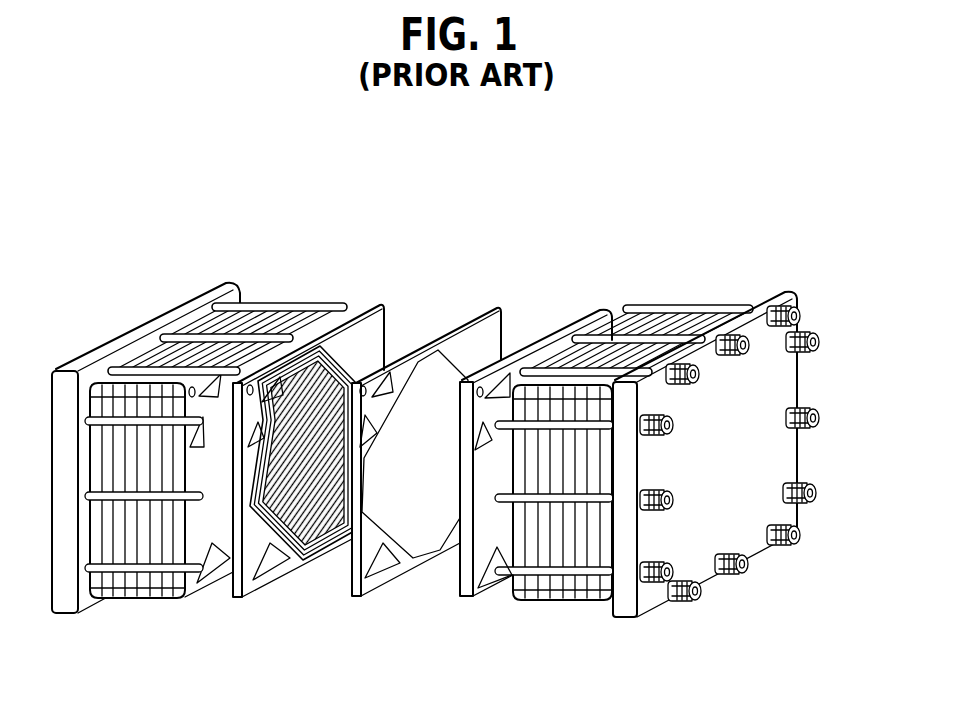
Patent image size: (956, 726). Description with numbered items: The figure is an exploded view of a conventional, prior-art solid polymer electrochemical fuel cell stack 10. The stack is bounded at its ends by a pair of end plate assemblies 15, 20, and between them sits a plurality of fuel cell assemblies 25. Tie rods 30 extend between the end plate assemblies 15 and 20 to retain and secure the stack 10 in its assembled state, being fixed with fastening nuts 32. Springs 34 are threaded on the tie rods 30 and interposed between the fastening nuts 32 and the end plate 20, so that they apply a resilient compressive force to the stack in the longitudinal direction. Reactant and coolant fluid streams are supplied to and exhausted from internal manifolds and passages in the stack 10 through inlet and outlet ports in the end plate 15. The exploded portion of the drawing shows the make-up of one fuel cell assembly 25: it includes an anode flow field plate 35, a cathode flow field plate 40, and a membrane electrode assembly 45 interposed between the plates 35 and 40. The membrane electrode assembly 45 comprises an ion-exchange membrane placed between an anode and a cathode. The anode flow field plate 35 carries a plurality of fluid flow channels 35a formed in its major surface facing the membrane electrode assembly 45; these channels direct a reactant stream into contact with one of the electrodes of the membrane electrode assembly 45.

The solid polymer electrochemical fuel cell stack 10 is at (239, 207).
The end plate assembly 15 is at (103, 350).
The end plate assembly 20 is at (785, 293).
The fuel cell assembly 25 is at (157, 598).
The tie rod 30 is at (298, 306).
The fastening nut 32 is at (820, 416).
The spring 34 is at (733, 576).
The anode flow field plate 35 is at (381, 307).
The fluid flow channel 35a is at (330, 540).
The cathode flow field plate 40 is at (614, 313).
The membrane electrode assembly 45 is at (497, 309).